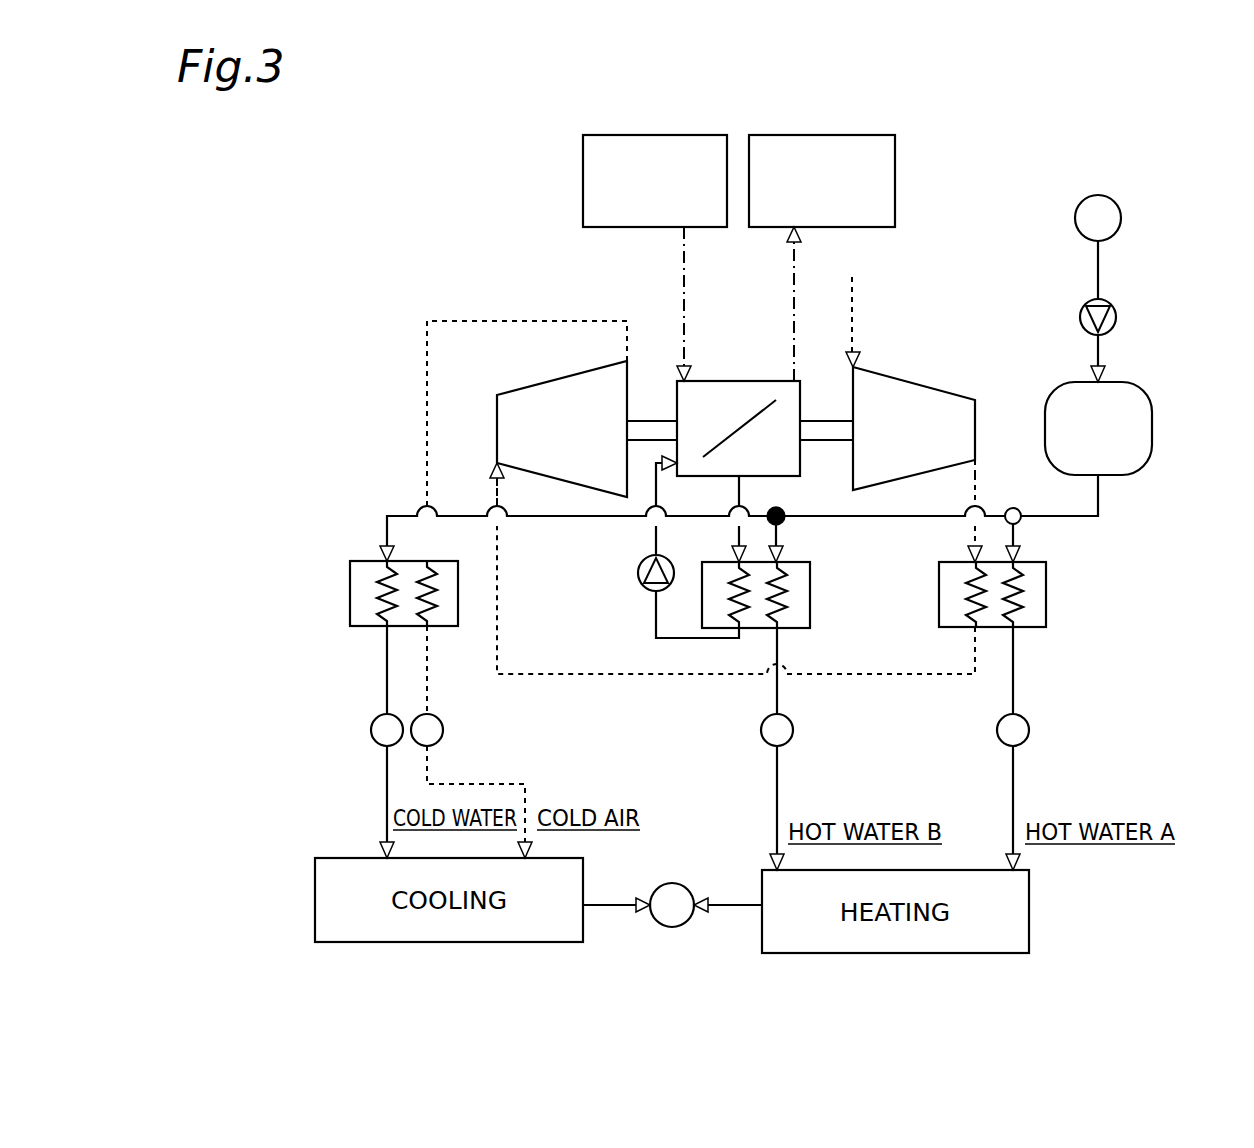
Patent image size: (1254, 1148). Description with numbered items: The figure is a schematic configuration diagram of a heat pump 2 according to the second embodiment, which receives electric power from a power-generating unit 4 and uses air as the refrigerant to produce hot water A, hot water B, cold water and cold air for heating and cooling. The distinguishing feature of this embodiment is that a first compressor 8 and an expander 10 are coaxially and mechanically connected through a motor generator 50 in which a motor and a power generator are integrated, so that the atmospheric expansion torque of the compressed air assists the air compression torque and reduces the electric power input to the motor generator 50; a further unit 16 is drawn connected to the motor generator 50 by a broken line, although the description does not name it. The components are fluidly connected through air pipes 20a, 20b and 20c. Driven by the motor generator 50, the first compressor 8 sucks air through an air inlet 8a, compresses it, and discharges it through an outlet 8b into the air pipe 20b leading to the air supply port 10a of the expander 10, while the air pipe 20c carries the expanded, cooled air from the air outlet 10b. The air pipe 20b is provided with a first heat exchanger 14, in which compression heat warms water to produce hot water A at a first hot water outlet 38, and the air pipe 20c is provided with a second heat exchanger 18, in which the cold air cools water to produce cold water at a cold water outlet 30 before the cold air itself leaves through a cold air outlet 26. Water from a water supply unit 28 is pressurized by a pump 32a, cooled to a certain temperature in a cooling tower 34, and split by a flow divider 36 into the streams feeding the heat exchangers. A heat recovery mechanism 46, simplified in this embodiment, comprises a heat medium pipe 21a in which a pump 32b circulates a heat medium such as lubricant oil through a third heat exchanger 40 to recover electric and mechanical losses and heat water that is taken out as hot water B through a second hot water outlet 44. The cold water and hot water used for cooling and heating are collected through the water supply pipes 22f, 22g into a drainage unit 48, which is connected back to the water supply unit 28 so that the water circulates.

The heat pump 2 is at (372, 240).
The power-generating unit 4 is at (583, 178).
The electric power consumer 16 is at (895, 192).
The motor generator 50 is at (740, 381).
The expander 10 is at (497, 425).
The air supply port 10a is at (497, 463).
The air outlet 10b is at (627, 361).
The first compressor 8 is at (960, 380).
The air inlet 8a is at (853, 367).
The outlet 8b is at (975, 460).
The air pipe 20a is at (852, 294).
The air pipe 20b is at (870, 674).
The air pipe 20c is at (520, 321).
The water supply unit 28 is at (1118, 232).
The pump 32a is at (1116, 317).
The cooling tower 34 is at (1152, 398).
The flow divider 36 is at (1020, 522).
The second heat exchanger 18 is at (352, 565).
The third heat exchanger 40 is at (810, 570).
The first heat exchanger 14 is at (1046, 590).
The pump 32b is at (638, 566).
The heat recovery mechanism 46 is at (610, 601).
The heat medium pipe 21a is at (650, 638).
The cold water outlet 30 is at (371, 731).
The cold air outlet 26 is at (443, 730).
The second hot water outlet 44 is at (793, 730).
The first hot water outlet 38 is at (997, 732).
The drainage unit 48 is at (672, 883).
The water supply pipe 22f is at (624, 907).
The water supply pipe 22g is at (730, 907).